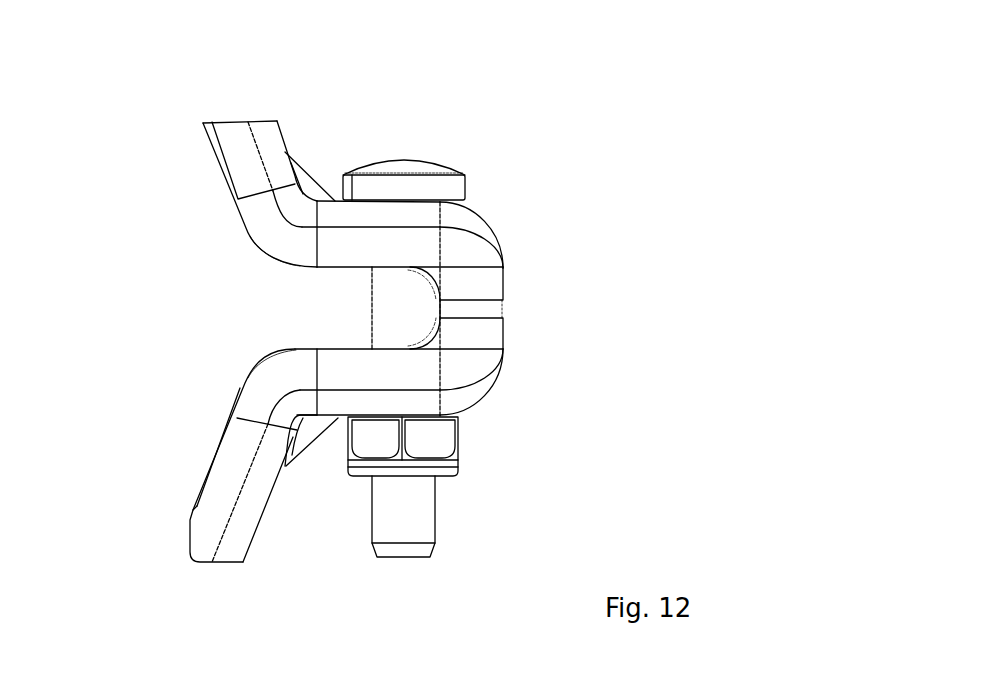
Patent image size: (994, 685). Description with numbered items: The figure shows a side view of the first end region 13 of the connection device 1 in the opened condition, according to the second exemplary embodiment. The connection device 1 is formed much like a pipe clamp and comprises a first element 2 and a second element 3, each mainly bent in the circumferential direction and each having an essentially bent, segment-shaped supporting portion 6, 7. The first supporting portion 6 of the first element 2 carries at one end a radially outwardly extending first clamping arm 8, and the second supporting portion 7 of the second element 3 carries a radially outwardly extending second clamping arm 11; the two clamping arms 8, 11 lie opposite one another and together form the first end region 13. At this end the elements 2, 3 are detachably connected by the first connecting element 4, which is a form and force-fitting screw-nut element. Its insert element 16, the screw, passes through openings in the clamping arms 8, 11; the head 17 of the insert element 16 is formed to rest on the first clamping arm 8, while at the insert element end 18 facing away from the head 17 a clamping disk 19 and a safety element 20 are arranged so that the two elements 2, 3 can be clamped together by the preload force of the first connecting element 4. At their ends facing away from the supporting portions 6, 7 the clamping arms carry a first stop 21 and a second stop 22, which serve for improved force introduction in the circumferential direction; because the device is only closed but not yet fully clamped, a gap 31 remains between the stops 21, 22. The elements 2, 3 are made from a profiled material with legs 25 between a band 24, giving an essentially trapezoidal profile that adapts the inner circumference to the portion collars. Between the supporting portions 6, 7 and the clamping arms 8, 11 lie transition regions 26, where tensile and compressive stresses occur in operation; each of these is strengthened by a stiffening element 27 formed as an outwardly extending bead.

The connection device 1 is at (570, 151).
The first element 2 is at (205, 140).
The second element 3 is at (205, 470).
The first connecting element 4 is at (420, 135).
The first supporting portion 6 is at (388, 210).
The second supporting portion 7 is at (344, 458).
The first clamping arm 8 is at (472, 225).
The second clamping arm 11 is at (482, 378).
The first end region 13 is at (495, 128).
The insert element 16 is at (370, 298).
The head 17 is at (400, 166).
The insert element end 18 is at (403, 560).
The washer flange 19 is at (443, 469).
The safety element 20 is at (443, 437).
The first stop 21 is at (492, 277).
The second stop 22 is at (497, 335).
The band 24 is at (258, 530).
The legs 25 is at (203, 522).
The transition regions 26 is at (232, 242).
The stiffening element 27 is at (307, 178).
The gap 31 is at (488, 308).